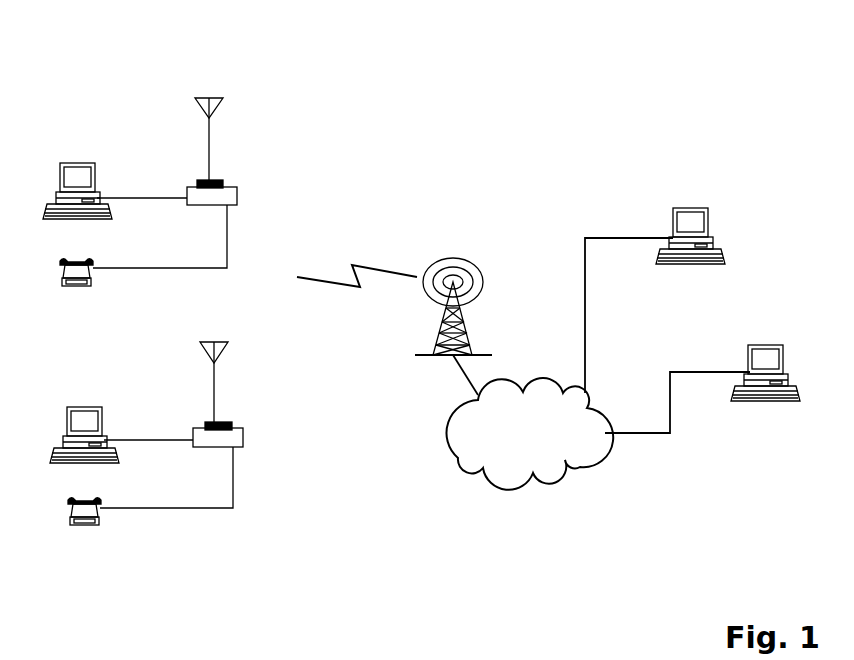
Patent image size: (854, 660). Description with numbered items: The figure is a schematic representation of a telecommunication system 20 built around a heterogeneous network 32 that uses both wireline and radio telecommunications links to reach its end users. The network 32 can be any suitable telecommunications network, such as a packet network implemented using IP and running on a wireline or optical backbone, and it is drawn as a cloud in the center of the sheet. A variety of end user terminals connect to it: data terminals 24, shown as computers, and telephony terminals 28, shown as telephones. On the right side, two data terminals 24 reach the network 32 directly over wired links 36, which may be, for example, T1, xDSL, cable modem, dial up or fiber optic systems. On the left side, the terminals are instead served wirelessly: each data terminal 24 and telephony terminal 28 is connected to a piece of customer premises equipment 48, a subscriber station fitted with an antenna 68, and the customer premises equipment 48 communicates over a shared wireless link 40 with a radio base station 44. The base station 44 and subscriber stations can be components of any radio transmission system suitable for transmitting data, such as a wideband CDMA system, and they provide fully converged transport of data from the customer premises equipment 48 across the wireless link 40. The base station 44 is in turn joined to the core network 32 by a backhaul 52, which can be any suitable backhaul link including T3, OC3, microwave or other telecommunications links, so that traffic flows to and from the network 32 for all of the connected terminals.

The telecommunication system 20 is at (410, 565).
The end user data terminal 24 is at (436, 300).
The telephony terminal 28 is at (81, 413).
The network 32 is at (530, 434).
The wired link 36 is at (667, 328).
The wireless link 40 is at (357, 257).
The radio base station 44 is at (453, 288).
The customer premises equipment (CPE) 48 is at (215, 326).
The backhaul 52 is at (458, 376).
The antenna 68 is at (196, 254).